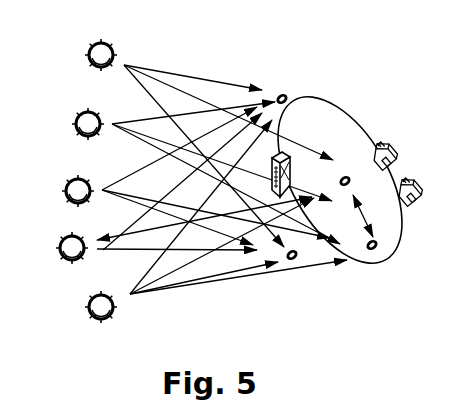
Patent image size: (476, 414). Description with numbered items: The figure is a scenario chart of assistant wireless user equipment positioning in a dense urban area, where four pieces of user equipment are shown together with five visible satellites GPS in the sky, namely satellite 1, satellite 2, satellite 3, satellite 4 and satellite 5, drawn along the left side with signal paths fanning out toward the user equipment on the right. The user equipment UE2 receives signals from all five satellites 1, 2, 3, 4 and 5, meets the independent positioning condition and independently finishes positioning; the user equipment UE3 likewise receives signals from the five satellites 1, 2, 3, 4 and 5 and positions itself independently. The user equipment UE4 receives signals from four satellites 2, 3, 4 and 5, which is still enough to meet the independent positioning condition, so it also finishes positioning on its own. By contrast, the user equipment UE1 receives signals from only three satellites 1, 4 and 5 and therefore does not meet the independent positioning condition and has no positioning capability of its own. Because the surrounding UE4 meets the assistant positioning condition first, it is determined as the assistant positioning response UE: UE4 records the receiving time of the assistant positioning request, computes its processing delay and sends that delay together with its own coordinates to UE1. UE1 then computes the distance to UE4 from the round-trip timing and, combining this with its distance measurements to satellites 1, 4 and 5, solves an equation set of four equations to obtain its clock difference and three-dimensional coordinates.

The GPS satellite GPS is at (182, 174).
The satellite GPS1 1 is at (203, 136).
The satellite GPS2 2 is at (191, 173).
The satellite GPS3 3 is at (187, 176).
The satellite GPS4 4 is at (178, 188).
The satellite GPS5 5 is at (203, 221).
The element UE1 is at (353, 166).
The element UE2 is at (307, 89).
The element UE3 is at (301, 275).
The element UE4 is at (388, 242).